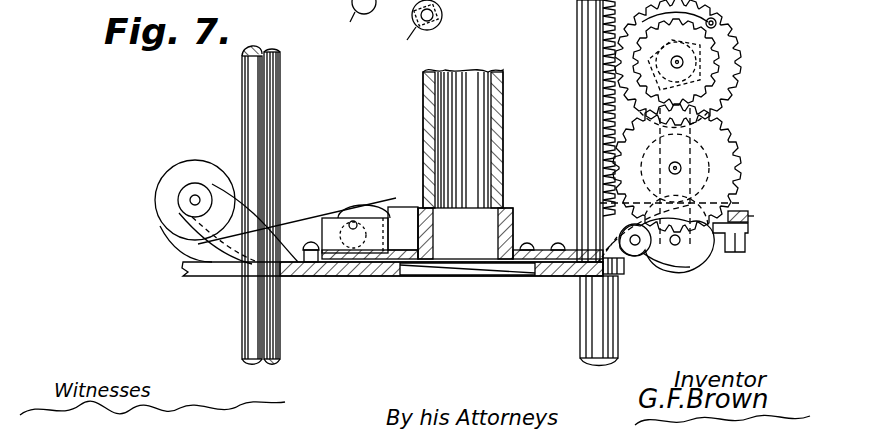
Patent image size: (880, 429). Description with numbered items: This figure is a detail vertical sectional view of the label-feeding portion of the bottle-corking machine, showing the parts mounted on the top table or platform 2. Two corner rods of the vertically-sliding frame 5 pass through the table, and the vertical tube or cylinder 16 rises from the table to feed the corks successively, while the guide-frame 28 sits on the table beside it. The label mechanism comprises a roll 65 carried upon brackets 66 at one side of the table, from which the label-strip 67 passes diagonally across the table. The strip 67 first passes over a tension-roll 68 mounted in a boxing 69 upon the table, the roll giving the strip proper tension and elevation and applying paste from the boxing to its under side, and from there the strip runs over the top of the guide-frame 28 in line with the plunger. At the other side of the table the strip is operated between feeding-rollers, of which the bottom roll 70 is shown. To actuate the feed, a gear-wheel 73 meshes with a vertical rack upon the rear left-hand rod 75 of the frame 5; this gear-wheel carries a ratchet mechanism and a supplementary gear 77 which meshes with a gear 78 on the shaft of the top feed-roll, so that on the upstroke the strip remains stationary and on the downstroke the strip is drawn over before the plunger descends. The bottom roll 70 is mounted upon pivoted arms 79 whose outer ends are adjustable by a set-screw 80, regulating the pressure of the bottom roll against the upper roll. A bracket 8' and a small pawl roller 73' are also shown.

The top table or platform 2 is at (350, 270).
The vertically-sliding frame 5 is at (282, 184).
The bracket 8' is at (750, 226).
The vertical tube or cylinder 16 is at (472, 150).
The guide-frame 28 is at (465, 233).
The roll 65 is at (195, 200).
The brackets 66 is at (229, 224).
The label-strip 67 is at (297, 212).
The tension-roll 68 is at (366, 212).
The boxing 69 is at (370, 230).
The bottom feeding-roller 70 is at (696, 272).
The gear-wheel 73 is at (706, 58).
The pawl roller 73' is at (373, 20).
The rear left-hand rod 75 is at (578, 44).
The supplementary gear 77 is at (720, 61).
The gear 78 is at (726, 172).
The pivoted arms 79 is at (647, 266).
The set-screw 80 is at (741, 249).